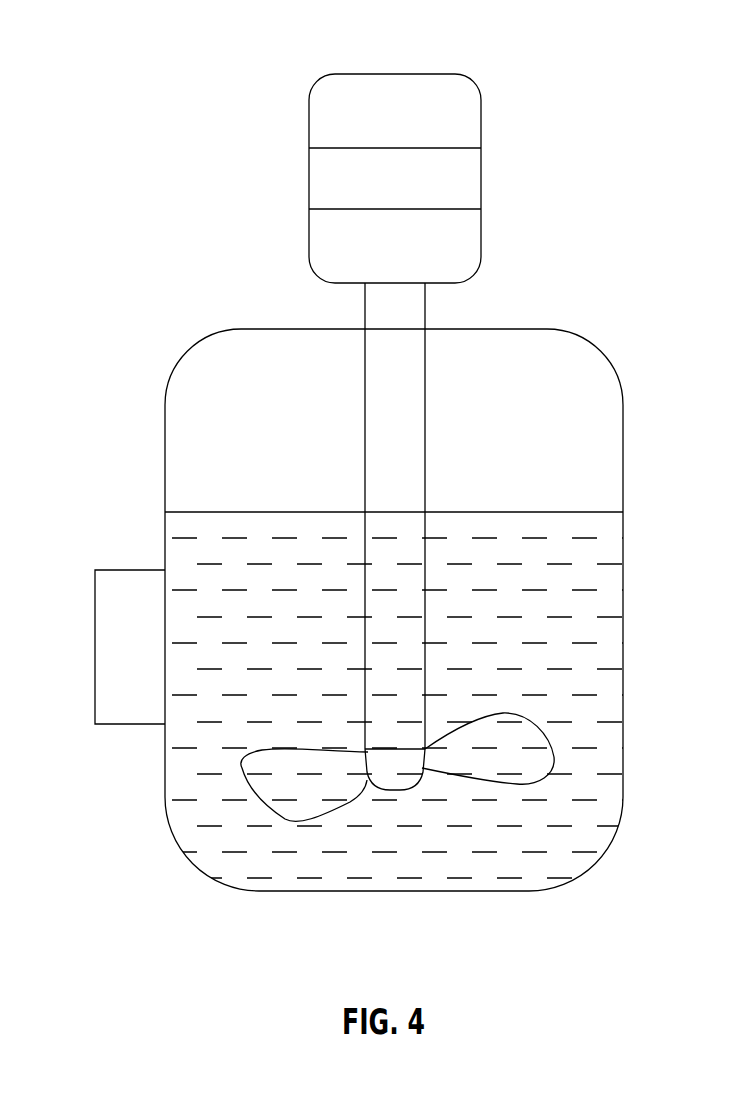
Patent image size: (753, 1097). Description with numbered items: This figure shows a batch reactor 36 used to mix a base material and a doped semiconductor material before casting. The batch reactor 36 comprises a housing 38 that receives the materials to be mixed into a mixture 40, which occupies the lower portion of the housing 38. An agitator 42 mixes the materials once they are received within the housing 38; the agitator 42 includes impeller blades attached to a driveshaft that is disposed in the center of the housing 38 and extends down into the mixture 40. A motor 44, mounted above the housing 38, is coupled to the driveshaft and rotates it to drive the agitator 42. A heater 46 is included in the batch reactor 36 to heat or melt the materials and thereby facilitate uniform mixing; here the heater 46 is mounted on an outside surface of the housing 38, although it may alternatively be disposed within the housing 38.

The batch reactor 36 is at (600, 60).
The housing 38 is at (165, 462).
The mixture 40 is at (602, 632).
The agitator 42 is at (395, 790).
The motor 44 is at (481, 118).
The heater 46 is at (113, 663).